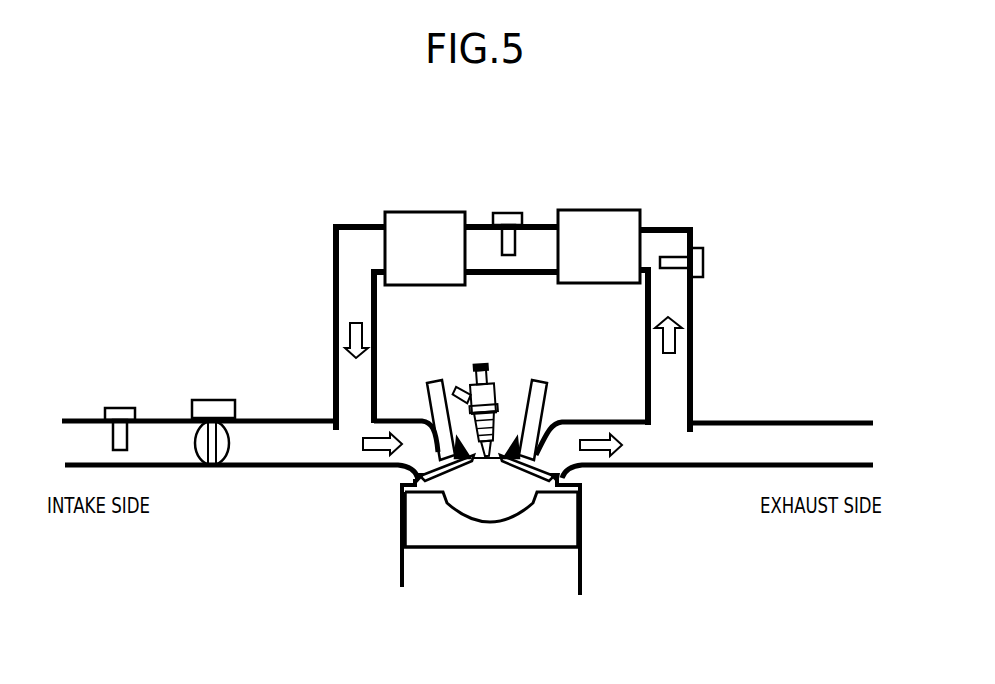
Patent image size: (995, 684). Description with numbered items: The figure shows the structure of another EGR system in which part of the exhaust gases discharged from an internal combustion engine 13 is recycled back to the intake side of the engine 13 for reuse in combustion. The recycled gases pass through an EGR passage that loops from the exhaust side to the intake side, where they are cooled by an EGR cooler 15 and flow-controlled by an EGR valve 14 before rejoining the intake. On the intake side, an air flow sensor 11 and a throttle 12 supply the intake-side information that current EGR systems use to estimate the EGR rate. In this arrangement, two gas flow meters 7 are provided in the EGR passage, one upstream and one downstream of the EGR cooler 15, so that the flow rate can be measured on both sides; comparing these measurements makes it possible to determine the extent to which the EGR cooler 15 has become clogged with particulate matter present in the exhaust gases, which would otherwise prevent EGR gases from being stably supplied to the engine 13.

The gas flow meter 7 is at (515, 212).
The air flow sensor 11 is at (122, 408).
The throttle 12 is at (207, 465).
The internal combustion engine 13 is at (553, 565).
The EGR valve 14 is at (412, 220).
The EGR cooler 15 is at (615, 212).